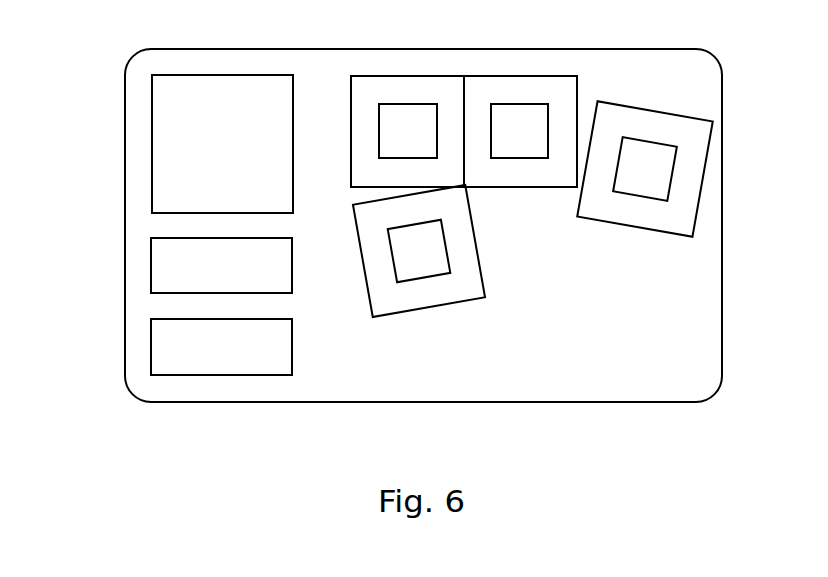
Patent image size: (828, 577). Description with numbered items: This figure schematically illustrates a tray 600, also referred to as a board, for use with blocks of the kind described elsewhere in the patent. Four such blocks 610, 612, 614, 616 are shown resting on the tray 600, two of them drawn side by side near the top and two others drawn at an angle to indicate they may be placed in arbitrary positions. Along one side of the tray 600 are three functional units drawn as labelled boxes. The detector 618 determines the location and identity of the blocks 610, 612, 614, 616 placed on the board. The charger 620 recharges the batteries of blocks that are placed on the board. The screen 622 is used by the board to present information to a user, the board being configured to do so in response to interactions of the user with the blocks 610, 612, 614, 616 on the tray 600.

The tray 600 is at (198, 402).
The block 610 is at (408, 76).
The block 612 is at (518, 76).
The block 614 is at (640, 112).
The block 616 is at (405, 312).
The detector 618 is at (151, 355).
The charger 620 is at (151, 273).
The screen 622 is at (152, 148).